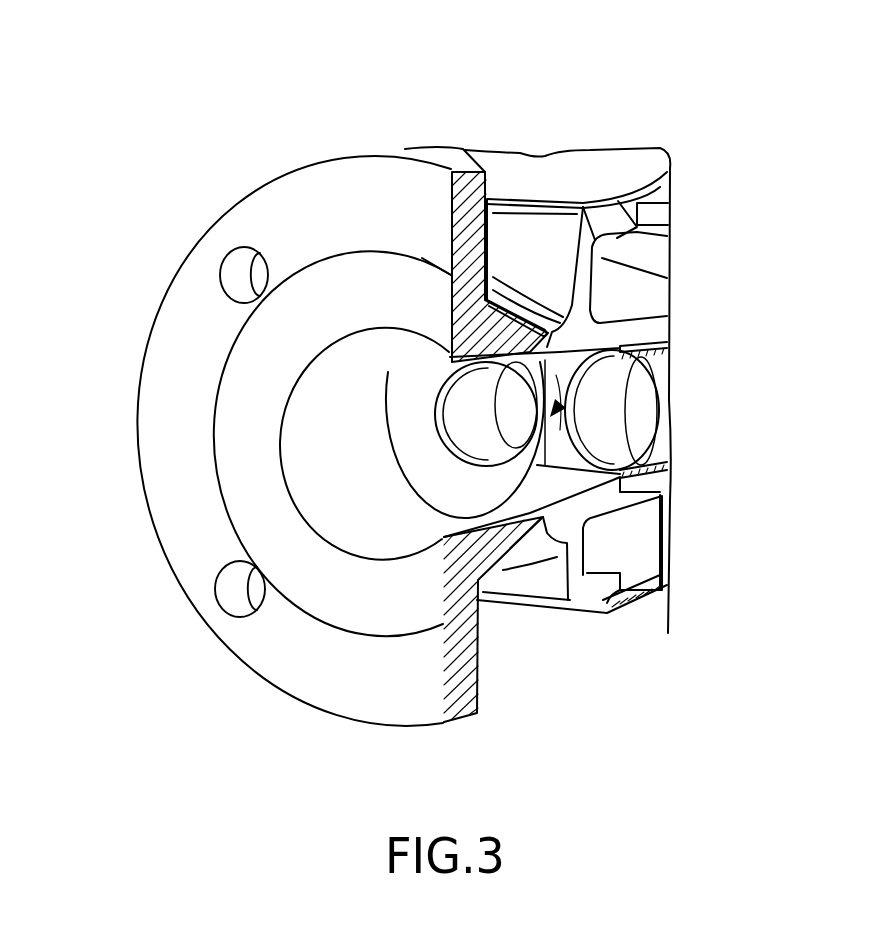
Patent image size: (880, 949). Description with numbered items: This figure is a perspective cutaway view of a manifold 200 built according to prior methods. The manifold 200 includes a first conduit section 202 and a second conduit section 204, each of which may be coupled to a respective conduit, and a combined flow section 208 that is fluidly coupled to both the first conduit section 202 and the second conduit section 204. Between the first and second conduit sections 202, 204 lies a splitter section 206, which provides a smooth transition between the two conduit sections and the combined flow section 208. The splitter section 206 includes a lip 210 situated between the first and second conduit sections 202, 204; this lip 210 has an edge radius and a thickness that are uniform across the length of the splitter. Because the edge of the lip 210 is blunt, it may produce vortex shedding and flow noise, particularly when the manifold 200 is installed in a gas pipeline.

The manifold 200 is at (128, 86).
The first conduit section 202 is at (512, 423).
The second conduit section 204 is at (617, 413).
The splitter section 206 is at (552, 414).
The combined flow section 208 is at (343, 427).
The lip 210 is at (600, 472).